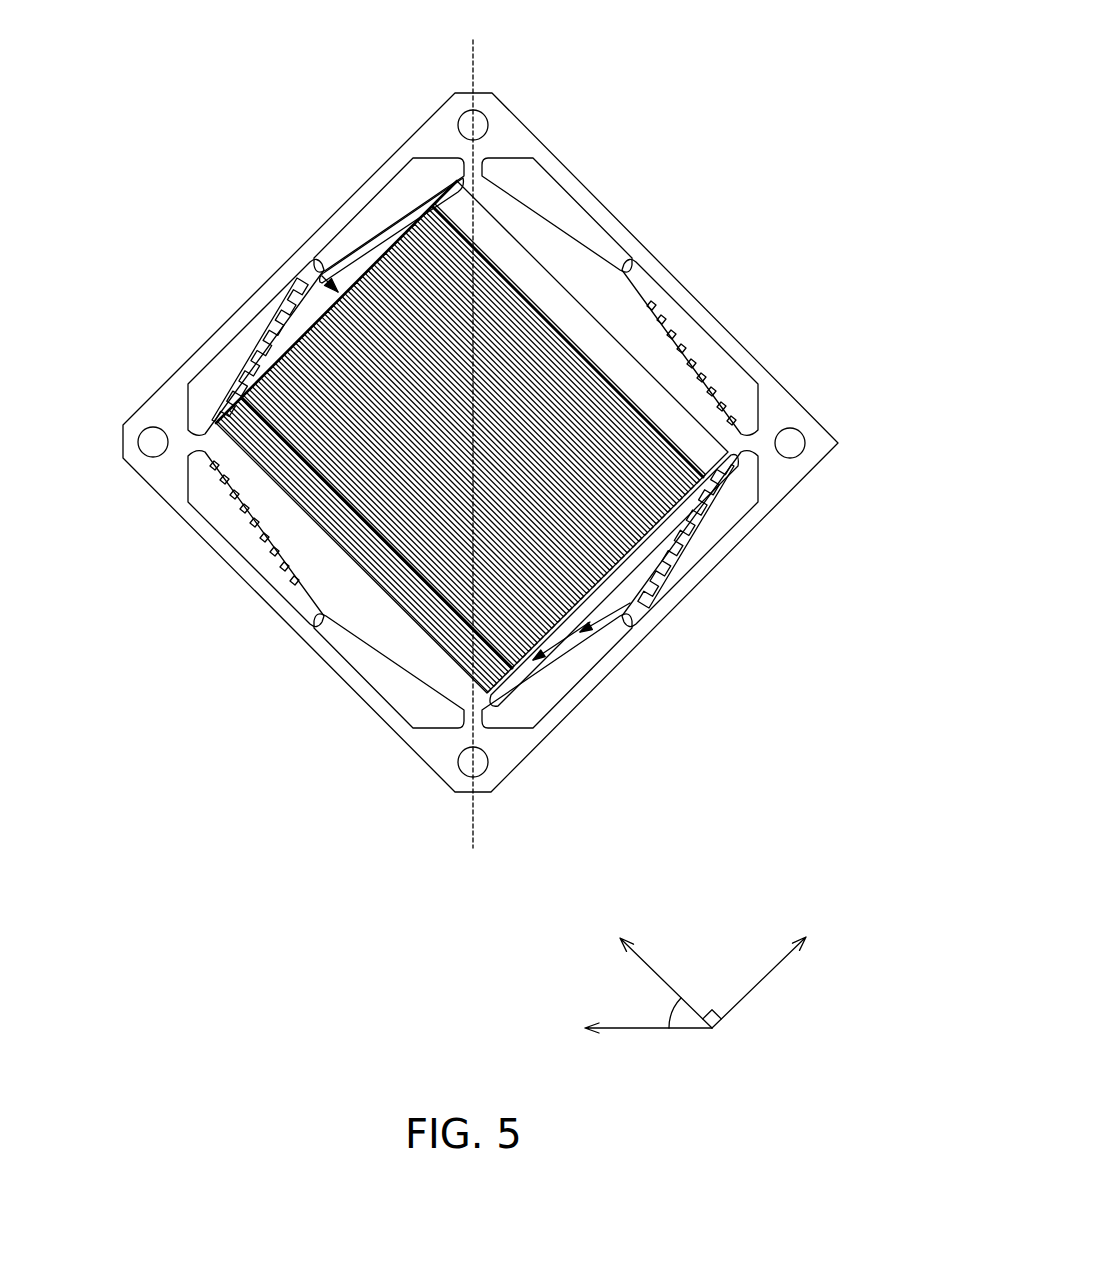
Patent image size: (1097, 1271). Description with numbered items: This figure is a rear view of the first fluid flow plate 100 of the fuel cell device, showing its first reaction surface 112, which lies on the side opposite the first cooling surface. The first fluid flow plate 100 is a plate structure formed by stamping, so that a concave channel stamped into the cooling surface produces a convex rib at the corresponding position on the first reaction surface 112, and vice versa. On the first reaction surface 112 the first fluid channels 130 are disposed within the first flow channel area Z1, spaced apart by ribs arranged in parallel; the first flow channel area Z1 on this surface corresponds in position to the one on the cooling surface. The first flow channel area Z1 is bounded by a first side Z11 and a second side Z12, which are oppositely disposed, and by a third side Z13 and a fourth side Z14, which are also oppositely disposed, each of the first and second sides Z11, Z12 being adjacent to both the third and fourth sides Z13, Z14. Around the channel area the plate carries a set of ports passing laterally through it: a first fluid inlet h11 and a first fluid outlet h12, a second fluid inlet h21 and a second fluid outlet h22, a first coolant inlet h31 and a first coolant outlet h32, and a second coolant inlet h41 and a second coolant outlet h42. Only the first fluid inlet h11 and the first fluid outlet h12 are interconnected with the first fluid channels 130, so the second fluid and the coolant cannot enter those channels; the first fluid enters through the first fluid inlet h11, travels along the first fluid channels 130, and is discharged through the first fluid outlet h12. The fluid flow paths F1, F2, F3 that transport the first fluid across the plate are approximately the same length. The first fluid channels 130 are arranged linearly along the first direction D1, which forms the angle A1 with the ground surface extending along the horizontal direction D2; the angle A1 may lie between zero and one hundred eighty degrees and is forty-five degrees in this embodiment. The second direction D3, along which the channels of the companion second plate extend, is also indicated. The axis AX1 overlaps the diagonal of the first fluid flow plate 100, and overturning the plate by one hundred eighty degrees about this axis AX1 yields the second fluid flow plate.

The first fluid flow plate 100 is at (849, 37).
The first reaction surface 112 is at (163, 470).
The first fluid channels 130 is at (583, 322).
The axis AX1 is at (473, 10).
The first fluid inlet h11 is at (393, 203).
The first fluid outlet h12 is at (540, 690).
The second fluid inlet h21 is at (552, 202).
The second fluid outlet h22 is at (395, 690).
The first coolant inlet h31 is at (730, 508).
The first coolant outlet h32 is at (207, 390).
The second coolant inlet h41 is at (240, 537).
The second coolant outlet h42 is at (737, 385).
The first flow channel area Z1 is at (325, 270).
The first side Z11 is at (318, 270).
The second side Z12 is at (645, 612).
The third side Z13 is at (652, 328).
The fourth side Z14 is at (290, 612).
The fluid flow path F1 is at (258, 318).
The fluid flow path F2 is at (598, 628).
The fluid flow path F3 is at (648, 560).
The first direction D1 is at (652, 966).
The horizontal direction D2 is at (626, 1031).
The second direction D3 is at (780, 966).
The angle A1 is at (677, 1009).